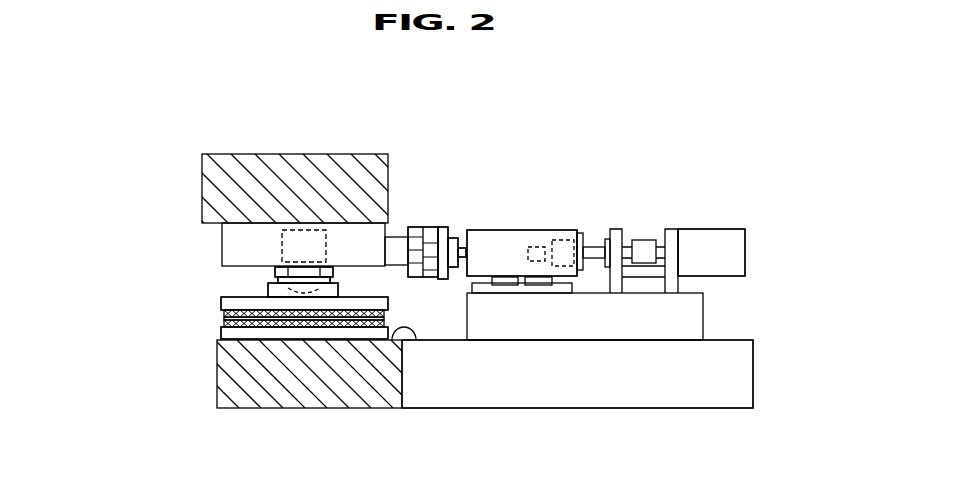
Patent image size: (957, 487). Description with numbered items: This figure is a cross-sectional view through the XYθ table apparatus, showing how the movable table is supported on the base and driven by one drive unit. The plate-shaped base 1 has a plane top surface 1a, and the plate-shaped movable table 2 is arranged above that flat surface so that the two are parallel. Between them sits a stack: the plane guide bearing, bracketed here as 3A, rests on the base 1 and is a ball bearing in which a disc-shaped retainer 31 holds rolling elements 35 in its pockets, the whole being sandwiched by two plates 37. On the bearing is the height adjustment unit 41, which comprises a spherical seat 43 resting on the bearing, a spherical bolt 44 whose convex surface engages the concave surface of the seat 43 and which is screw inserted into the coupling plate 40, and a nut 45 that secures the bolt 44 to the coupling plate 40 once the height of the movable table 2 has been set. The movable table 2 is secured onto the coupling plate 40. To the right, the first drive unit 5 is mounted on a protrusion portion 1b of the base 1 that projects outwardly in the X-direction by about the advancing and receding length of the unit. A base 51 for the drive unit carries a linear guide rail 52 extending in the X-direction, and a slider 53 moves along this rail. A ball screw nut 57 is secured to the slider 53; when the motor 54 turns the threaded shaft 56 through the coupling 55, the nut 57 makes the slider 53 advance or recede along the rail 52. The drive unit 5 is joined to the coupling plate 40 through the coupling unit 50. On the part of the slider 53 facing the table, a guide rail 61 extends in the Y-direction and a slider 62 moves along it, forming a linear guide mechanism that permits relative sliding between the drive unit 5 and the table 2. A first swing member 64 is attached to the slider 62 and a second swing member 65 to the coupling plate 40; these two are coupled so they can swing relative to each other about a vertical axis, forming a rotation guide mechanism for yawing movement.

The base 1 is at (232, 363).
The plane top surface 1a is at (410, 326).
The protrusion portion 1b is at (745, 378).
The movable table 2 is at (210, 190).
The laminated stack 3A is at (124, 262).
The first drive unit 5 is at (597, 204).
The retainer 31 is at (224, 321).
The rolling elements 35 is at (224, 313).
The plates 37 is at (220, 302).
The coupling plate 40 is at (225, 240).
The height adjustment unit 41 is at (227, 82).
The spherical seat 43 is at (332, 280).
The spherical bolt 44 is at (340, 288).
The nut 45 is at (276, 267).
The coupling unit 50 is at (393, 119).
The base for the drive unit 51 is at (695, 318).
The linear guide rail for the drive unit 52 is at (563, 292).
The slider for the drive unit 53 is at (500, 245).
The motor 54 is at (738, 252).
The coupling 55 is at (645, 238).
The threaded shaft 56 is at (540, 247).
The ball screw nut 57 is at (565, 240).
The guide rail for the coupling unit 61 is at (462, 248).
The slider for the coupling unit 62 is at (453, 238).
The first swing member 64 is at (440, 227).
The second swing member 65 is at (412, 227).